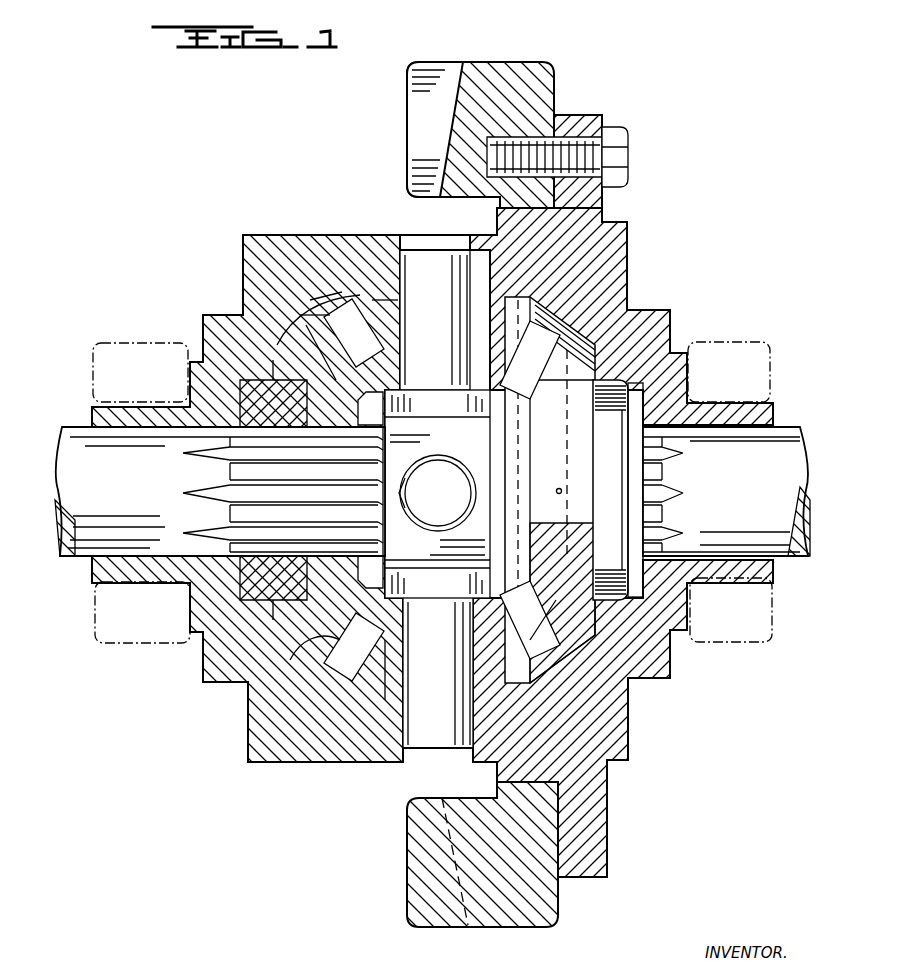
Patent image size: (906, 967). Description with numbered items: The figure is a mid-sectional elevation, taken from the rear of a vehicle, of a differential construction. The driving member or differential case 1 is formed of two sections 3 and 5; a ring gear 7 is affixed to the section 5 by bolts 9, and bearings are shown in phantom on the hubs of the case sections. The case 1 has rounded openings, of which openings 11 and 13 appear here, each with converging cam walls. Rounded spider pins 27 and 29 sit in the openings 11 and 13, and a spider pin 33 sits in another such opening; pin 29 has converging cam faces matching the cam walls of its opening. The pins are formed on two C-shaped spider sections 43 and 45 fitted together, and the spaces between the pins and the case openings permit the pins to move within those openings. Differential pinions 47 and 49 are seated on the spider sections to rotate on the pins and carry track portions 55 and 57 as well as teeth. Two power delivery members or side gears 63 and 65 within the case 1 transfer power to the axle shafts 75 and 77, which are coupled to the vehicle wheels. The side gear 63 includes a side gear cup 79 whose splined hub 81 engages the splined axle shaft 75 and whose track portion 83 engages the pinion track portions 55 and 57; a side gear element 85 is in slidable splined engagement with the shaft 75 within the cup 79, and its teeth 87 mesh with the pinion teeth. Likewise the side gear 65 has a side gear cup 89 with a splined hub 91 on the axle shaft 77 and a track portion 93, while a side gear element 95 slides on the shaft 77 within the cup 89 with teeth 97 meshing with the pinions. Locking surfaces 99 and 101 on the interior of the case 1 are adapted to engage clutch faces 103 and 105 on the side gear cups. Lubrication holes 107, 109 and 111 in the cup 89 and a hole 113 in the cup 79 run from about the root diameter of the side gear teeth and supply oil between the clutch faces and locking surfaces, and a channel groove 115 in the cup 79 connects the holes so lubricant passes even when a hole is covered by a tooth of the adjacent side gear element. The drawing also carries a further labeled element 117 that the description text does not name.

The differential case 1 is at (626, 256).
The case section 3 is at (292, 236).
The case section 5 is at (665, 322).
The ring gear 7 is at (520, 80).
The bolts 9 is at (622, 161).
The rounded opening 11 is at (398, 256).
The rounded opening 13 is at (401, 750).
The spider pin 27 is at (445, 334).
The spider pin 29 is at (447, 646).
The spider pin 33 is at (450, 504).
The spider section 43 is at (445, 414).
The spider section 45 is at (483, 453).
The differential pinion 47 is at (520, 386).
The differential pinion 49 is at (395, 690).
The track portion 55 is at (346, 330).
The track portion 57 is at (336, 660).
The side gear 63 is at (190, 673).
The side gear 65 is at (668, 340).
The axle shaft 75 is at (138, 501).
The axle shaft 77 is at (747, 501).
The side gear cup 79 is at (250, 690).
The splined hub 81 is at (210, 336).
The track portion 83 is at (378, 300).
The side gear element 85 is at (338, 581).
The teeth 87 is at (330, 670).
The side gear cup 89 is at (566, 474).
The splined hub 91 is at (620, 462).
The track portion 93 is at (490, 765).
The side gear element 95 is at (546, 628).
The teeth 97 is at (630, 733).
The locking surface 99 is at (302, 330).
The locking surface 101 is at (598, 236).
The clutch face 103 is at (302, 680).
The clutch face 105 is at (570, 622).
The lubrication hole 107 is at (630, 276).
The lubrication hole 109 is at (562, 489).
The lubrication hole 111 is at (630, 691).
The lubrication hole 113 is at (333, 330).
The channel groove 115 is at (244, 302).
The shoulder 117 is at (668, 648).